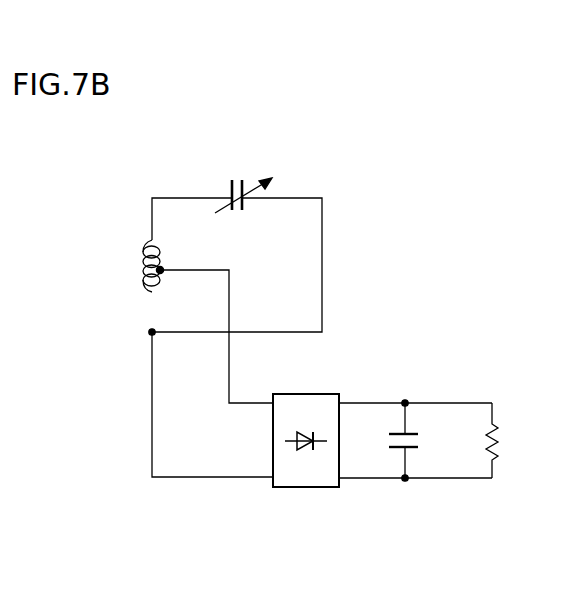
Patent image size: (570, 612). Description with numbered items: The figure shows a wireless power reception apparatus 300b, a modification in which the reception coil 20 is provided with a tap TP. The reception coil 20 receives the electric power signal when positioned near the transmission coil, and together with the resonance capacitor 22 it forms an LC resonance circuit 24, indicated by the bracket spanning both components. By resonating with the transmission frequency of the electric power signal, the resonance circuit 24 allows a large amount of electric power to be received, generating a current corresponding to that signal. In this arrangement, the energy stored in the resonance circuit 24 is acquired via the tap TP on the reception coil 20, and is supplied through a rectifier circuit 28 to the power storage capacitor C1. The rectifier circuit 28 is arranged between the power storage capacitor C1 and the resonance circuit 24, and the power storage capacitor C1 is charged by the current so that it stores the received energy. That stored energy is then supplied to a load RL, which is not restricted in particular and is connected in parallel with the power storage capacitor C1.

The reception coil 20 is at (138, 258).
The resonance capacitor 22 is at (230, 189).
The LC resonance circuit 24 is at (202, 139).
The tap TP is at (167, 258).
The rectifier circuit 28 is at (310, 488).
The power storage capacitor C1 is at (421, 440).
The load RL is at (500, 445).
The wireless power reception apparatus 300b is at (360, 590).